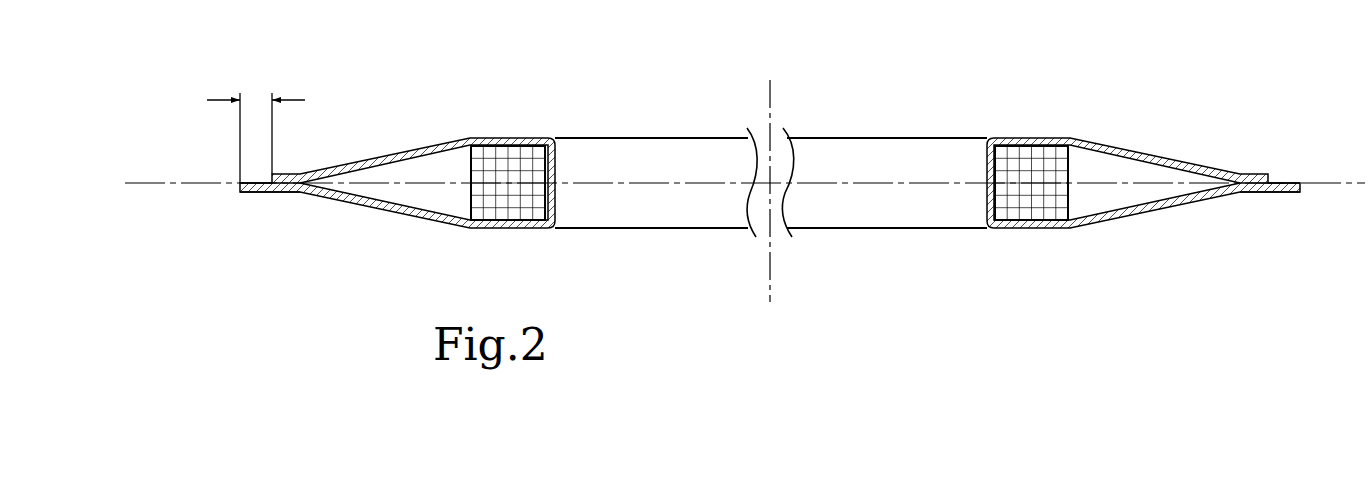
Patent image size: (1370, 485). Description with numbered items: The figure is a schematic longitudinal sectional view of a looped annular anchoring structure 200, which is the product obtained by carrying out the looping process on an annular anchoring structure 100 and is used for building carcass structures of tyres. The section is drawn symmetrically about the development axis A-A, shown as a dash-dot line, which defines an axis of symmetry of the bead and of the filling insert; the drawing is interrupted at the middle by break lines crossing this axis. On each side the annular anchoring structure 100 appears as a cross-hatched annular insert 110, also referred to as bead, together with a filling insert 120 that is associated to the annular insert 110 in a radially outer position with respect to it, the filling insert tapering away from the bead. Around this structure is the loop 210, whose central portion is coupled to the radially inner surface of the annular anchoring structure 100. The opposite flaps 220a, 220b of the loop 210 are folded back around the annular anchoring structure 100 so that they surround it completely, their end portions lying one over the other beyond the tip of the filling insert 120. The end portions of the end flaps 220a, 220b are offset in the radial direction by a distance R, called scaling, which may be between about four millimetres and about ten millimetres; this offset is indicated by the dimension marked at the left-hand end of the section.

The annular anchoring structure 100 is at (1030, 121).
The annular insert 110 is at (1018, 167).
The filling insert 120 is at (1100, 173).
The looped annular anchoring structure 200 is at (958, 279).
The loop 210 is at (515, 145).
The end flap 220a is at (327, 192).
The end flap 220b is at (338, 170).
The distance R is at (258, 95).
The development axis A is at (770, 100).